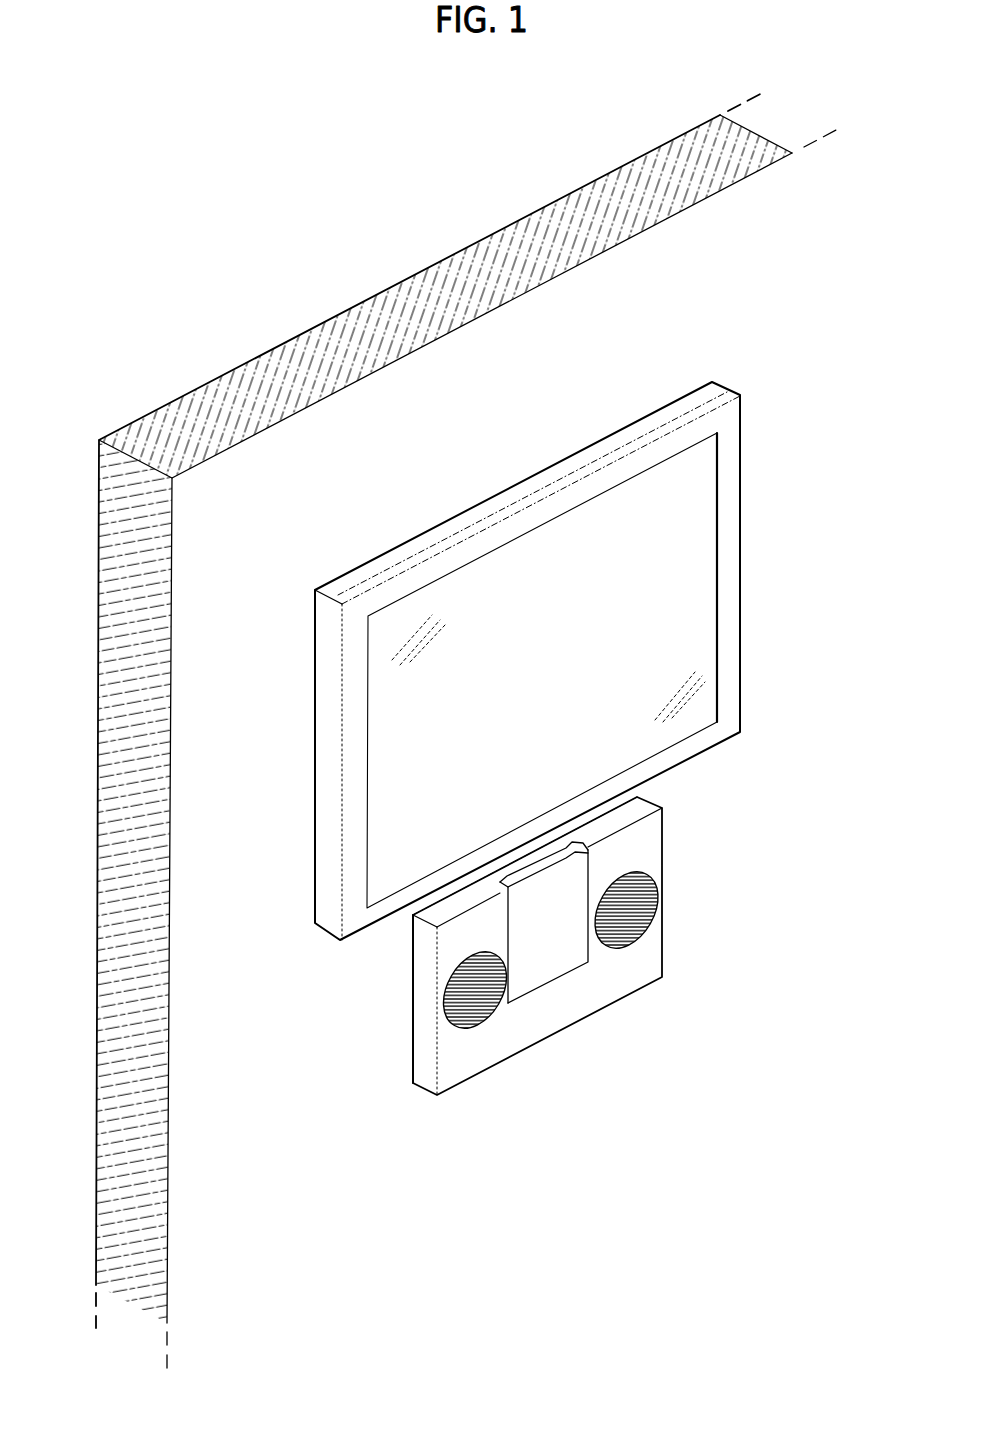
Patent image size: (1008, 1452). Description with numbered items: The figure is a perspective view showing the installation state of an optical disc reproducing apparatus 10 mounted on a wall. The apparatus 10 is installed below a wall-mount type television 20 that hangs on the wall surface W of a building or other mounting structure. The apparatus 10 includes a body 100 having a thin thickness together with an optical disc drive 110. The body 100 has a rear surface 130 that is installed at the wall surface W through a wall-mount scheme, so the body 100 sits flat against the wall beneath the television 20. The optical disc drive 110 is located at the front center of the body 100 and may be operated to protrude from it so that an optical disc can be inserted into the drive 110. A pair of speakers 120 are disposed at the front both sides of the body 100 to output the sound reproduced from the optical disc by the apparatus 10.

The wall surface W is at (366, 403).
The wall-mount type television 20 is at (758, 528).
The optical disc reproducing apparatus 10 is at (540, 973).
The body 100 is at (649, 943).
The optical disc drive 110 is at (580, 866).
The speakers 120 is at (649, 897).
The rear surface 130 is at (412, 1045).